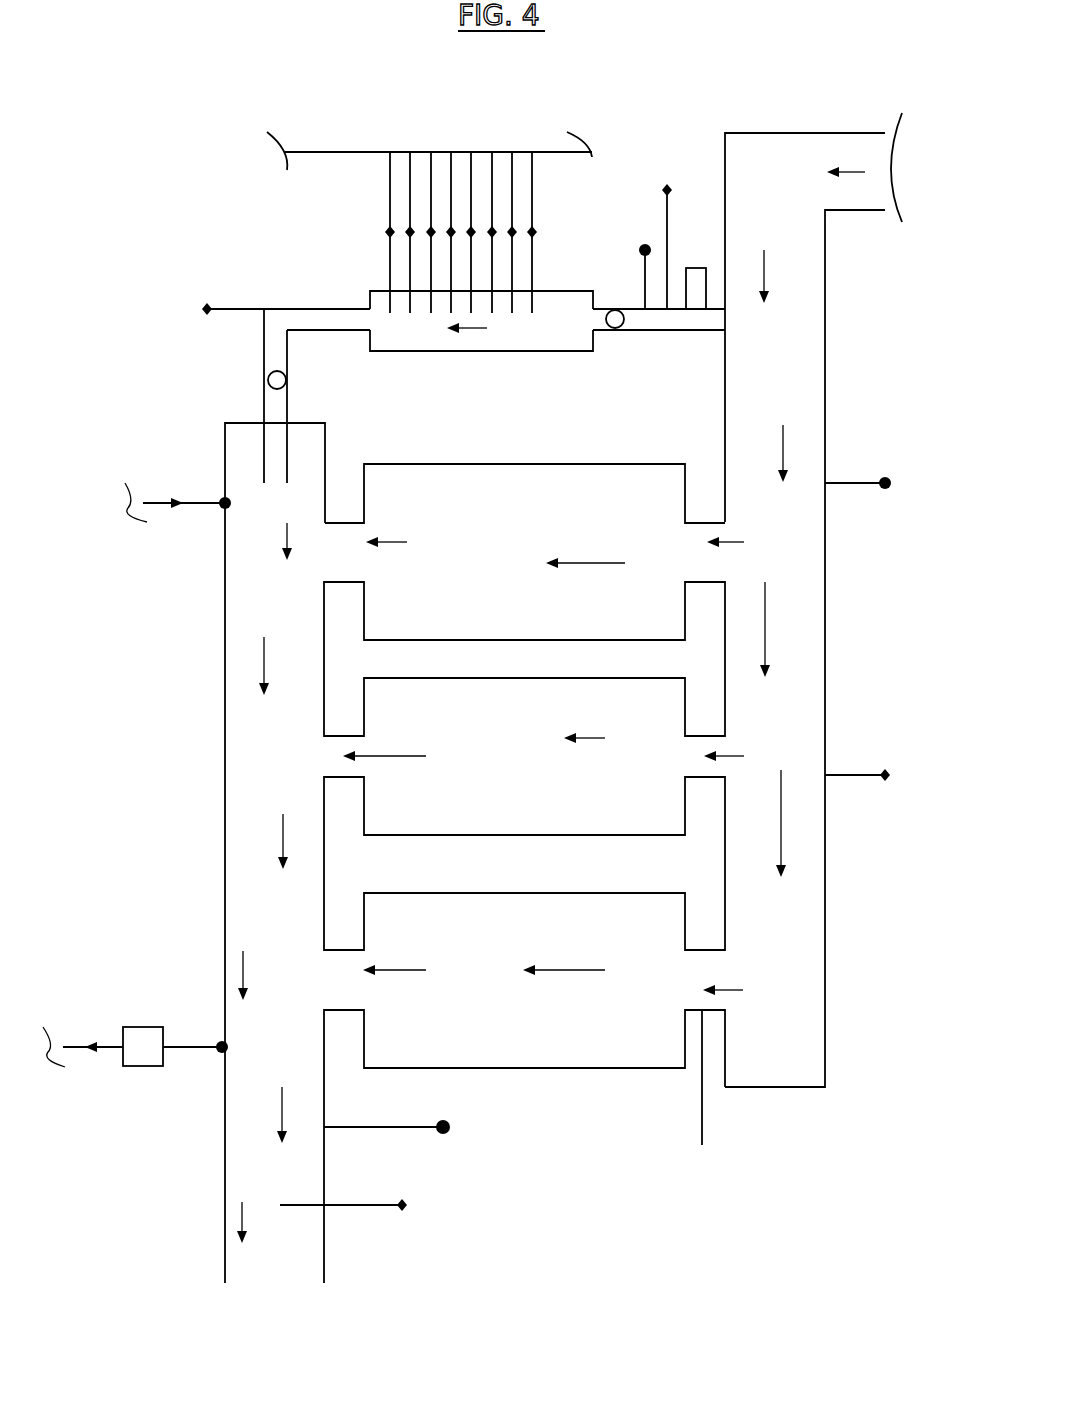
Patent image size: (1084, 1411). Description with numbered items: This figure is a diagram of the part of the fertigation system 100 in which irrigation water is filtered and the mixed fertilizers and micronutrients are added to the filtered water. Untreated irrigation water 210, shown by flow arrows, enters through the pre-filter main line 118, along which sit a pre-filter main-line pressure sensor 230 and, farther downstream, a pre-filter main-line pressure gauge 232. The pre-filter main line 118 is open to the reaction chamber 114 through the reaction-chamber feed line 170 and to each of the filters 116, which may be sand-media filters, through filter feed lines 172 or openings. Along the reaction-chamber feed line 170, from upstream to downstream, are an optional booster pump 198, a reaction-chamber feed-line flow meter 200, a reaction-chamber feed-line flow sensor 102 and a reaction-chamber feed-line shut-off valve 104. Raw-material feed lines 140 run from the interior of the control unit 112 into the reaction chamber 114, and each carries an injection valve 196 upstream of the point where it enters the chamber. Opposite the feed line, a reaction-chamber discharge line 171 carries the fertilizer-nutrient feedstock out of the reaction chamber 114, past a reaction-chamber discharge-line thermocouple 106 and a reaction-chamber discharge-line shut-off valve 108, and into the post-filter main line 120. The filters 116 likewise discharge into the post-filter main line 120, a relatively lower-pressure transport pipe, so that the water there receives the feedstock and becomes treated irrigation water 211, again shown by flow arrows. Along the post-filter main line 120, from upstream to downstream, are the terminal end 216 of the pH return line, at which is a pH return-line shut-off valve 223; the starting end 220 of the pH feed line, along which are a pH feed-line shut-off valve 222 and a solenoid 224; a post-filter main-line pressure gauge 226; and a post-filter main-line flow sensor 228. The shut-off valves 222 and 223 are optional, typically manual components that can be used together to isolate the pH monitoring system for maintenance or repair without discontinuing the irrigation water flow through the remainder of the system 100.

The system 100 is at (180, 145).
The reaction-chamber feed-line flow sensor 102 is at (644, 268).
The reaction-chamber feed-line shut-off valve 104 is at (615, 327).
The reaction-chamber discharge-line thermocouple 106 is at (207, 309).
The reaction-chamber discharge-line shut-off valve 108 is at (264, 376).
The control unit 112 is at (556, 152).
The reaction chamber 114 is at (538, 334).
The filters 116 is at (458, 522).
The pre-filter main line 118 is at (825, 698).
The post-filter main line 120 is at (225, 735).
The raw-material feed lines 140 is at (428, 172).
The reaction-chamber feed line 170 is at (703, 330).
The reaction-chamber discharge line 171 is at (318, 329).
The filter feed lines 172 is at (705, 562).
The injection valve 196 is at (388, 232).
The booster pump 198 is at (694, 268).
The reaction-chamber feed-line flow meter 200 is at (667, 235).
The untreated irrigation water 210 is at (765, 638).
The treated irrigation water 211 is at (283, 833).
The terminal end of the pH return line 216 is at (208, 502).
The starting end of the pH feed line 220 is at (102, 1050).
The pH feed-line shut-off valve 222 is at (222, 1050).
The pH return-line shut-off valve 223 is at (225, 505).
The solenoid 224 is at (138, 1025).
The post-filter main-line pressure gauge 226 is at (405, 1128).
The post-filter main-line flow sensor 228 is at (342, 1206).
The pre-filter main-line pressure sensor 230 is at (843, 483).
The pre-filter main-line pressure gauge 232 is at (843, 777).